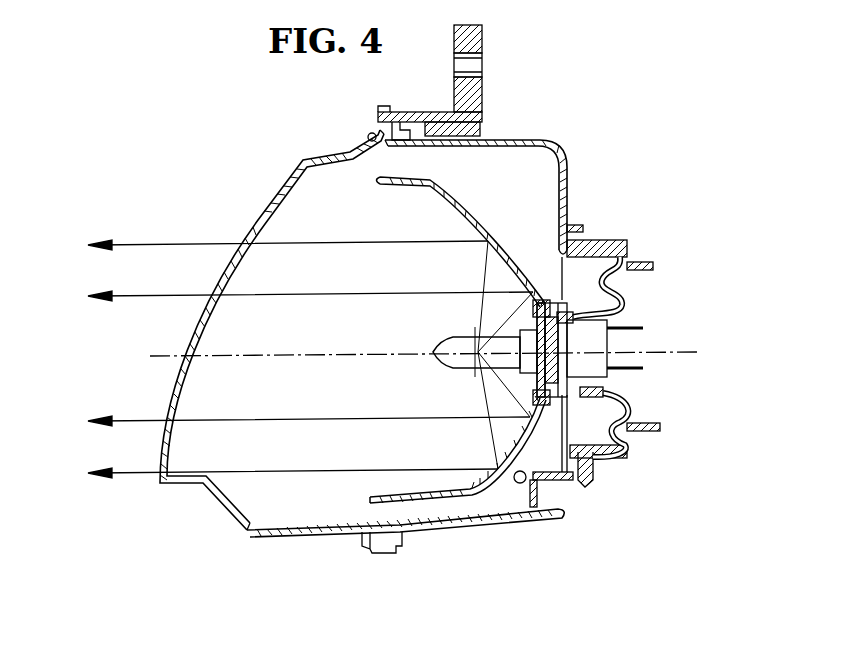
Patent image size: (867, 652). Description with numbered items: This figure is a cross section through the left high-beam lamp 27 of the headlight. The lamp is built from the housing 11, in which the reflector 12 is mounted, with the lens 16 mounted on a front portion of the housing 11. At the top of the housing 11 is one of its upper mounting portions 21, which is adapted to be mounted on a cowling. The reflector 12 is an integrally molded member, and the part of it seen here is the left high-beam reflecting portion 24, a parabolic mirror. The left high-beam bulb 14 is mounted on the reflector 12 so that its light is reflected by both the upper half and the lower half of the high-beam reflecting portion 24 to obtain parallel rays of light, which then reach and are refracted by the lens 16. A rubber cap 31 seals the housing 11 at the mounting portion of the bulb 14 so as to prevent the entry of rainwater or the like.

The left high-beam lamp 27 is at (248, 140).
The lens 16 is at (250, 218).
The housing 11 is at (522, 535).
The upper mounting portion 21 is at (483, 45).
The reflector 12 is at (427, 503).
The left high-beam reflecting portion 24 is at (465, 203).
The left high-beam bulb 14 is at (433, 349).
The rubber cap 31 is at (618, 243).